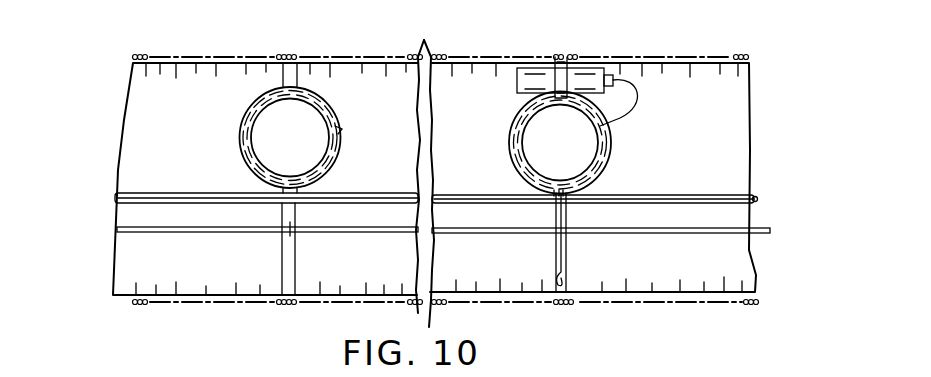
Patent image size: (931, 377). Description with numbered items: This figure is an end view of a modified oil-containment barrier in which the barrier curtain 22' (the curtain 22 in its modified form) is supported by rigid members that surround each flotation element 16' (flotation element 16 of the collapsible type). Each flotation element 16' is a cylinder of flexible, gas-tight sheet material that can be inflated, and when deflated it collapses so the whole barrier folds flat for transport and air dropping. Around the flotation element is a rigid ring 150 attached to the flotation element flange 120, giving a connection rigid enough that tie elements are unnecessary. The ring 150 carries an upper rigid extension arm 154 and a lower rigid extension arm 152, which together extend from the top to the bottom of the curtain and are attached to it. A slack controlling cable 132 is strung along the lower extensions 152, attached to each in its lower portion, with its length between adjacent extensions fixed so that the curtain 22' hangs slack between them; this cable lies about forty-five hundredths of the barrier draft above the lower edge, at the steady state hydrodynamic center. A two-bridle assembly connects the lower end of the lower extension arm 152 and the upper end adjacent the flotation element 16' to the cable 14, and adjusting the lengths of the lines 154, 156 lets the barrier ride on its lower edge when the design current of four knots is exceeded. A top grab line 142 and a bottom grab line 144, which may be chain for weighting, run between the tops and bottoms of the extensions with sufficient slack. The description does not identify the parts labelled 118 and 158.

The cable 14 is at (478, 194).
The flotation element 16' is at (260, 138).
The flotation element 16 is at (537, 139).
The barrier curtain 22' is at (247, 179).
The barrier curtain 22 is at (620, 177).
The buckle 118 is at (541, 78).
The flotation element flange 120 is at (346, 125).
The slack controlling cable 132 is at (140, 232).
The top grab line 142 is at (425, 170).
The bottom grab line 144 is at (272, 305).
The rigid ring 150 is at (254, 178).
The lower rigid extension arm 152 is at (290, 265).
The upper rigid extension arm 154 is at (292, 78).
The line 156 is at (585, 194).
The pin 158 is at (556, 248).